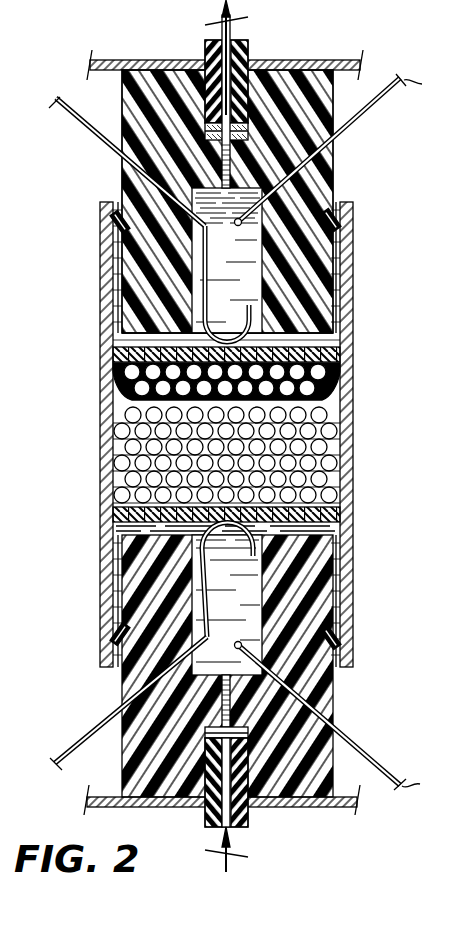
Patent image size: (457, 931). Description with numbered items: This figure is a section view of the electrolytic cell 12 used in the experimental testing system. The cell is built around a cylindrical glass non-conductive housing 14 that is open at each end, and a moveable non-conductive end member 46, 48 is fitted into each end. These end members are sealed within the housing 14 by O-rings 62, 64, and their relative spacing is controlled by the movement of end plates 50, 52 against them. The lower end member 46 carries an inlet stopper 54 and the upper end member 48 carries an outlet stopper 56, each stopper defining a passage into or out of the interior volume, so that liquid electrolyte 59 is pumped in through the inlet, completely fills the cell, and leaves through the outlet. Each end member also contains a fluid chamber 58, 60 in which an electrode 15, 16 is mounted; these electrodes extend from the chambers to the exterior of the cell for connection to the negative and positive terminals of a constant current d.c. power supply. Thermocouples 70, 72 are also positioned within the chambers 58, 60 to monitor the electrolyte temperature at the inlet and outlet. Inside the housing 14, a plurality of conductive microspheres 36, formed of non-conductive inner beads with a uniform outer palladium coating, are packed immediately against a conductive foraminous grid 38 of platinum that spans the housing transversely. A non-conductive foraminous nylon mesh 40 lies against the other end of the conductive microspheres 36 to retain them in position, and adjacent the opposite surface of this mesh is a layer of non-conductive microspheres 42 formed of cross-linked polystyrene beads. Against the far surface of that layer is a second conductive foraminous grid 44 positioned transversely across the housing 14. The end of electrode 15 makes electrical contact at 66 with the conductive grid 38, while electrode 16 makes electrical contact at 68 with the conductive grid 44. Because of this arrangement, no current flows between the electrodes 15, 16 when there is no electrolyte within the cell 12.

The electrolytic cell 12 is at (94, 446).
The housing 14 is at (100, 346).
The electrode 15 is at (118, 714).
The electrode 16 is at (88, 128).
The conductive microspheres 36 is at (130, 478).
The conductive foraminous grid 38 is at (318, 478).
The non-conductive foraminous nylon mesh 40 is at (330, 371).
The non-conductive microspheres 42 is at (128, 372).
The conductive foraminous grid 44 is at (318, 332).
The end member 46 is at (132, 604).
The end member 48 is at (333, 170).
The end plate 50 is at (170, 808).
The end plate 52 is at (305, 60).
The inlet stopper 54 is at (250, 822).
The outlet stopper 56 is at (250, 45).
The fluid chamber 58 is at (262, 604).
The liquid electrolyte 59 is at (232, 288).
The fluid chamber 60 is at (262, 262).
The O-ring 62 is at (118, 625).
The O-ring 64 is at (336, 195).
The electrical contact 66 is at (218, 566).
The electrical contact 68 is at (222, 336).
The thermocouple 70 is at (348, 741).
The thermocouple 72 is at (364, 111).